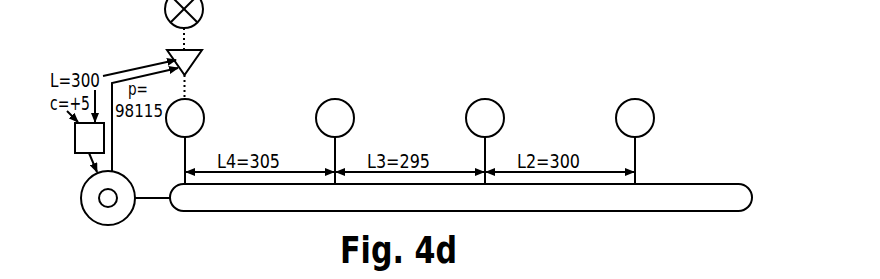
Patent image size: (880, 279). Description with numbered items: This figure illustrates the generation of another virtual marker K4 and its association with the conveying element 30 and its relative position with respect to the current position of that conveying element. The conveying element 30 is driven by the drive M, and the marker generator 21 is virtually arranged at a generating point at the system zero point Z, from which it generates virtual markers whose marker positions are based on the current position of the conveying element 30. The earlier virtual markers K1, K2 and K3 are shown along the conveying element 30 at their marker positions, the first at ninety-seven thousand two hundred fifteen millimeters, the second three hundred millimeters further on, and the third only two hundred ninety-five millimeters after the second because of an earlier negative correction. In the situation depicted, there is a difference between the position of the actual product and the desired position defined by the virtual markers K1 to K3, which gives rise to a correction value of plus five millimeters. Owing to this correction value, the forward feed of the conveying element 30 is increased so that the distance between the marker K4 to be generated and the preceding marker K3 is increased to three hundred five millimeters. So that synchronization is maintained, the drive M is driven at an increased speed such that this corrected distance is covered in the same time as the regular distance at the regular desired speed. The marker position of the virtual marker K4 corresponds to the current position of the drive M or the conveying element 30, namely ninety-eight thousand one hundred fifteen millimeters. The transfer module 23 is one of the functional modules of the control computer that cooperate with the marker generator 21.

The marker generator 21 is at (190, 57).
The transfer module 23 is at (80, 140).
The conveying element 30 is at (715, 198).
The system zero point Z is at (165, 11).
The drive M is at (88, 203).
The virtual marker K1 is at (641, 115).
The virtual marker K2 is at (491, 115).
The virtual marker K3 is at (341, 115).
The virtual marker K4 is at (191, 115).